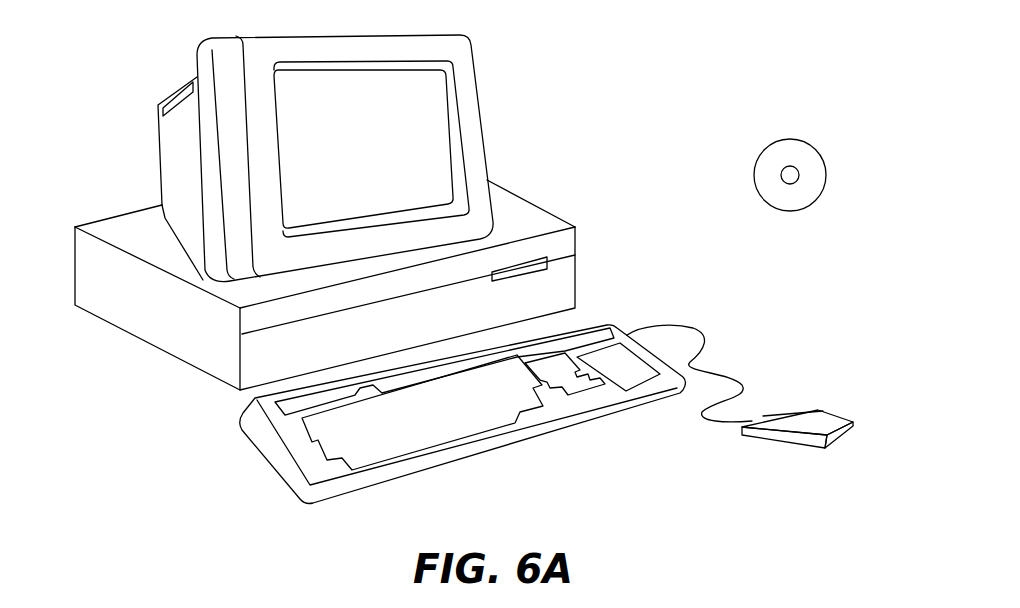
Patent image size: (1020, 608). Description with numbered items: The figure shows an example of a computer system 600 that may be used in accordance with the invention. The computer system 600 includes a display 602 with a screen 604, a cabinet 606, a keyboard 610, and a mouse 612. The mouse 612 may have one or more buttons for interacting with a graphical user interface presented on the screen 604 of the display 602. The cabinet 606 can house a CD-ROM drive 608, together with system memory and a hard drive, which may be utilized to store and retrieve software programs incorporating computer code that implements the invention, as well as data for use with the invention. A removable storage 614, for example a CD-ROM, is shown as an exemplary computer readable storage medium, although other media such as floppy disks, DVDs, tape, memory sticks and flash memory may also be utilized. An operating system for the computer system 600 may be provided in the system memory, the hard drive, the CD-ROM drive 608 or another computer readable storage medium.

The computer system 600 is at (706, 27).
The display 602 is at (485, 157).
The screen 604 is at (442, 103).
The cabinet 606 is at (203, 278).
The CD-ROM drive 608 is at (548, 258).
The keyboard 610 is at (470, 457).
The mouse 612 is at (818, 410).
The removable storage 614 is at (808, 143).